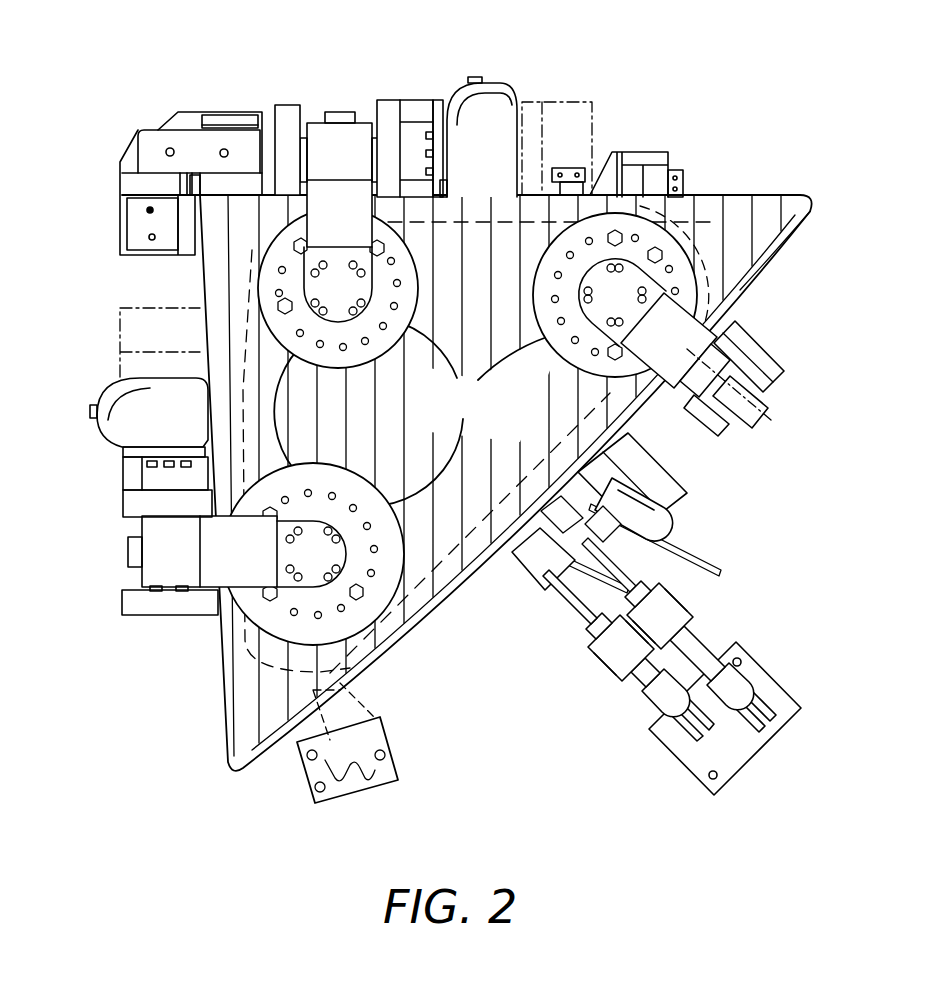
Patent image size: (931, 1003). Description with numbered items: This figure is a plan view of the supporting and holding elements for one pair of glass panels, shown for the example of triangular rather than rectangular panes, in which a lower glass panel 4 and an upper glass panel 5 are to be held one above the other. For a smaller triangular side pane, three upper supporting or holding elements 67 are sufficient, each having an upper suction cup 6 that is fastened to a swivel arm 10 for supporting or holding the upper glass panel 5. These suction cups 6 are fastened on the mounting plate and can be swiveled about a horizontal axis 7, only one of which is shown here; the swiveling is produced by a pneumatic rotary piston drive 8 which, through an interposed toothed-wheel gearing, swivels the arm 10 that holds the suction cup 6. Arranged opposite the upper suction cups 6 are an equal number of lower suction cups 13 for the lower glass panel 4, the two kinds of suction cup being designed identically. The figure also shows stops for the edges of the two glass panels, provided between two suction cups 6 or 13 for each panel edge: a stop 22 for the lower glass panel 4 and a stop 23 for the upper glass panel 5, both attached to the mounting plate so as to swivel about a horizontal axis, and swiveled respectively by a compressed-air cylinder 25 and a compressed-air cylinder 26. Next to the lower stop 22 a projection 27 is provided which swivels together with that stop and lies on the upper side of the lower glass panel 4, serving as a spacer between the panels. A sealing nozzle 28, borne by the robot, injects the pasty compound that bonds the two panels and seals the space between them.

The lower glass panel 4 is at (800, 238).
The upper glass panel 5 is at (768, 210).
The upper suction cup 6 is at (415, 411).
The horizontal axis 7 is at (753, 338).
The pneumatic rotary piston drive 8 is at (492, 120).
The swivel arm 10 is at (357, 142).
The lower suction cup 13 is at (265, 290).
The stop for the lower glass panel 22 is at (583, 540).
The stop for the upper glass panel 23 is at (523, 573).
The compressed-air cylinder 25 is at (690, 645).
The compressed-air cylinder 26 is at (618, 653).
The projection 27 is at (590, 507).
The sealing nozzle 28 is at (362, 802).
The upper supporting or holding element 67 is at (419, 88).